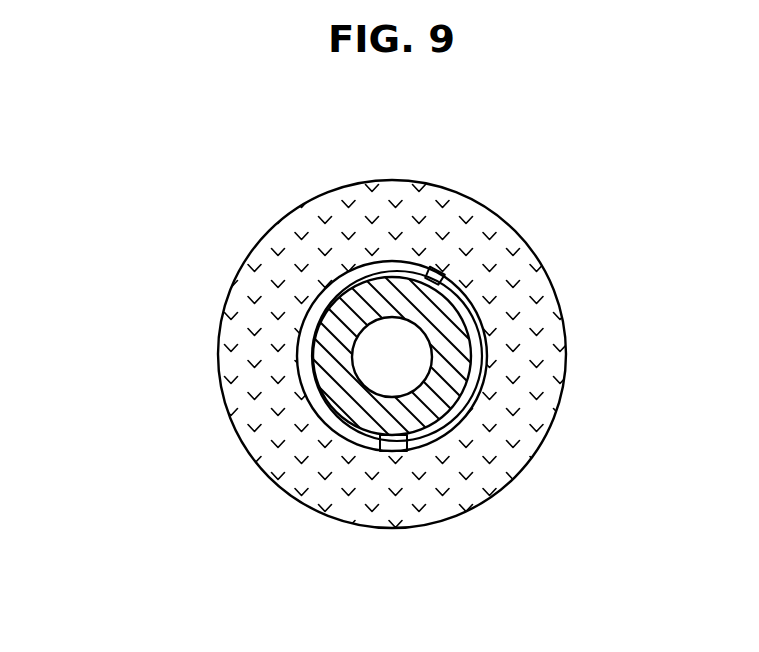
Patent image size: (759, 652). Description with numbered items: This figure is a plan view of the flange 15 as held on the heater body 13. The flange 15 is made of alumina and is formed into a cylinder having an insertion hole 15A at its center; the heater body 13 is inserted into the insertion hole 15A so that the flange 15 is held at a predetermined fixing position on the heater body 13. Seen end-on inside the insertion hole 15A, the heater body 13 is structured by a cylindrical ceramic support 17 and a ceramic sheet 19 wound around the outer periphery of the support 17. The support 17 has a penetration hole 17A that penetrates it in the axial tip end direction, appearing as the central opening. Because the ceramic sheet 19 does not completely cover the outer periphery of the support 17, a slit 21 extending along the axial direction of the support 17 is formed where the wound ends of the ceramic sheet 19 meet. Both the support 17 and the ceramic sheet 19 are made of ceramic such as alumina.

The heater body 13 is at (257, 387).
The flange 15 is at (551, 287).
The insertion hole 15A is at (442, 272).
The support 17 is at (347, 405).
The penetration hole 17A is at (426, 339).
The ceramic sheet 19 is at (305, 333).
The slit 21 is at (387, 450).